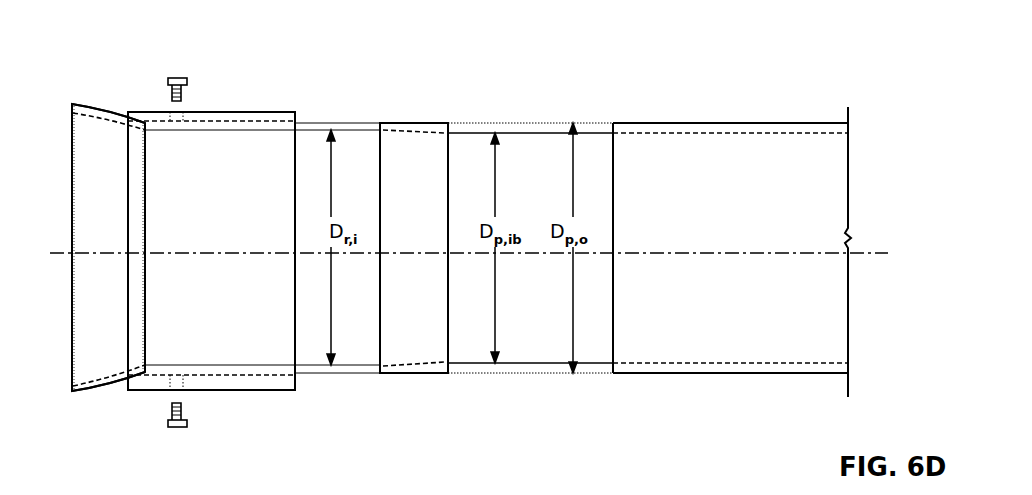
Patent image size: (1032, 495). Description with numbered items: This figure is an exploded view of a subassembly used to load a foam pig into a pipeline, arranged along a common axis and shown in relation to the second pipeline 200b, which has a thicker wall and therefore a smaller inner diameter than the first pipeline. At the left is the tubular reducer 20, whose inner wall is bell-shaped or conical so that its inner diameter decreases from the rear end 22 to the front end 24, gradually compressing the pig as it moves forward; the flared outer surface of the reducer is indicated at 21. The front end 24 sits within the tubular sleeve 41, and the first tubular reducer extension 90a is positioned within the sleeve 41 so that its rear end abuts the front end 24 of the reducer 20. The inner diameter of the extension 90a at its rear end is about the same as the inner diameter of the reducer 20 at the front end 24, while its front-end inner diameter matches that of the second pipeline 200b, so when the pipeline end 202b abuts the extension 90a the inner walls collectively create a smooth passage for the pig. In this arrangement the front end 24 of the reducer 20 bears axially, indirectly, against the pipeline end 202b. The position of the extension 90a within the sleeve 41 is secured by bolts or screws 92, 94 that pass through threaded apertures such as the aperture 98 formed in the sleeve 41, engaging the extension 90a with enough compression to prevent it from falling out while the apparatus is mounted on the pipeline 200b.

The tubular reducer 20 is at (108, 393).
The flange outer surface 21 is at (101, 112).
The rear end 22 is at (72, 389).
The front end 24 is at (145, 218).
The tubular sleeve 41 is at (265, 390).
The bolt or screw 92 is at (176, 78).
The bolt or screw 94 is at (176, 122).
The threaded aperture 98 is at (178, 375).
The first tubular reducer extension 90a is at (383, 123).
The second pipeline 200b is at (762, 374).
The pipeline end 202b is at (612, 374).